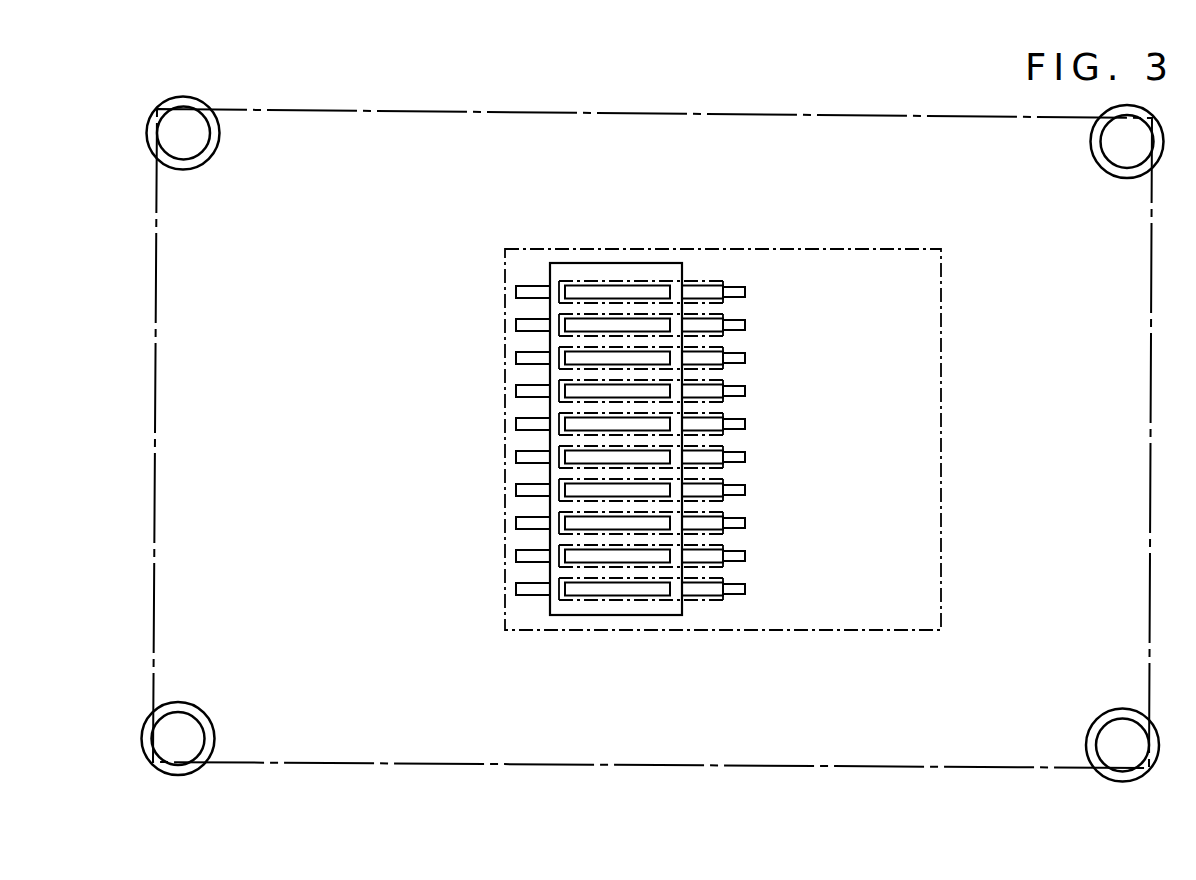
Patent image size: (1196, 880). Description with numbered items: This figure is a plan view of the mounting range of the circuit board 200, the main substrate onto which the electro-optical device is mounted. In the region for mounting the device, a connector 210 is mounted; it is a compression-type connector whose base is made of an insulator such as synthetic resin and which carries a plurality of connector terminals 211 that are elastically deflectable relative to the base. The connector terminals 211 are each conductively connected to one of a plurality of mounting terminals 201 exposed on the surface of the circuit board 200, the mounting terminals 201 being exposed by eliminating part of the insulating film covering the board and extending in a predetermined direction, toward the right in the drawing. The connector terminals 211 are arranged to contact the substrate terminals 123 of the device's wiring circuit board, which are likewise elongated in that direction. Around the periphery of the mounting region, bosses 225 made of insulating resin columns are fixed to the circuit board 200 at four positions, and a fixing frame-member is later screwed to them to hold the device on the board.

The circuit board 200 is at (1075, 453).
The bosses 225 is at (1097, 162).
The connector 210 is at (597, 615).
The connector terminals 211 is at (617, 285).
The substrate terminals 123 is at (703, 280).
The mounting terminals 201 is at (745, 522).